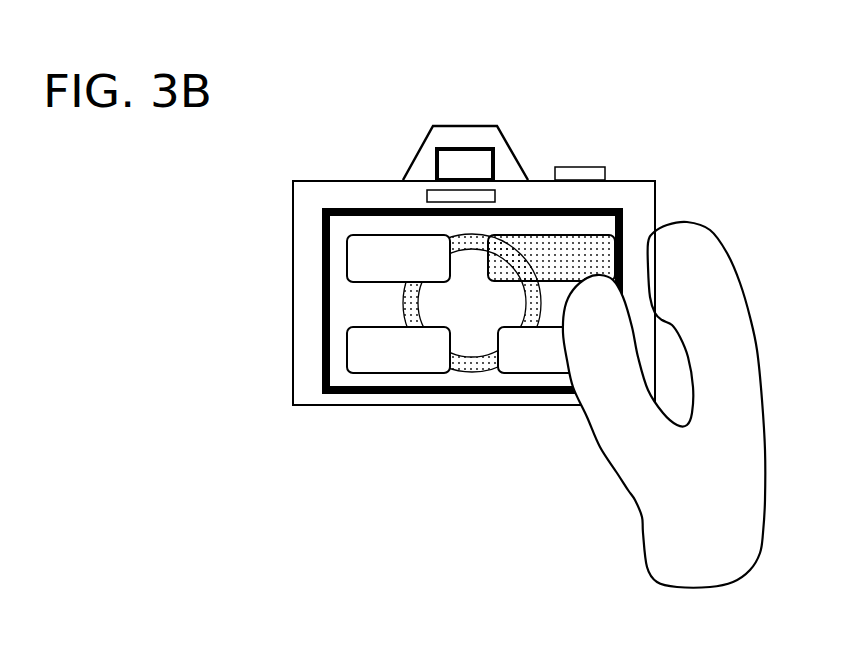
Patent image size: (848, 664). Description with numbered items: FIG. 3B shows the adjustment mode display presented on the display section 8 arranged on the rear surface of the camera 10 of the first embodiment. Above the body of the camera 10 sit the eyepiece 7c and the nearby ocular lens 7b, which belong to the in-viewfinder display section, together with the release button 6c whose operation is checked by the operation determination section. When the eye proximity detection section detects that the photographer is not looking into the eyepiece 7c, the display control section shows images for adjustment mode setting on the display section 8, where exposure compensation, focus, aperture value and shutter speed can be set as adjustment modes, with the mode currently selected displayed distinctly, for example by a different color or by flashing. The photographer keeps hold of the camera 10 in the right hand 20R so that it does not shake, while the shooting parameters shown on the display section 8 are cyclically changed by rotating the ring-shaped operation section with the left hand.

The camera 10 is at (292, 270).
The eyepiece 7c is at (472, 147).
The ocular lens 7b is at (427, 197).
The release button 6c is at (580, 167).
The display section 8 is at (493, 380).
The right hand 20R is at (630, 493).